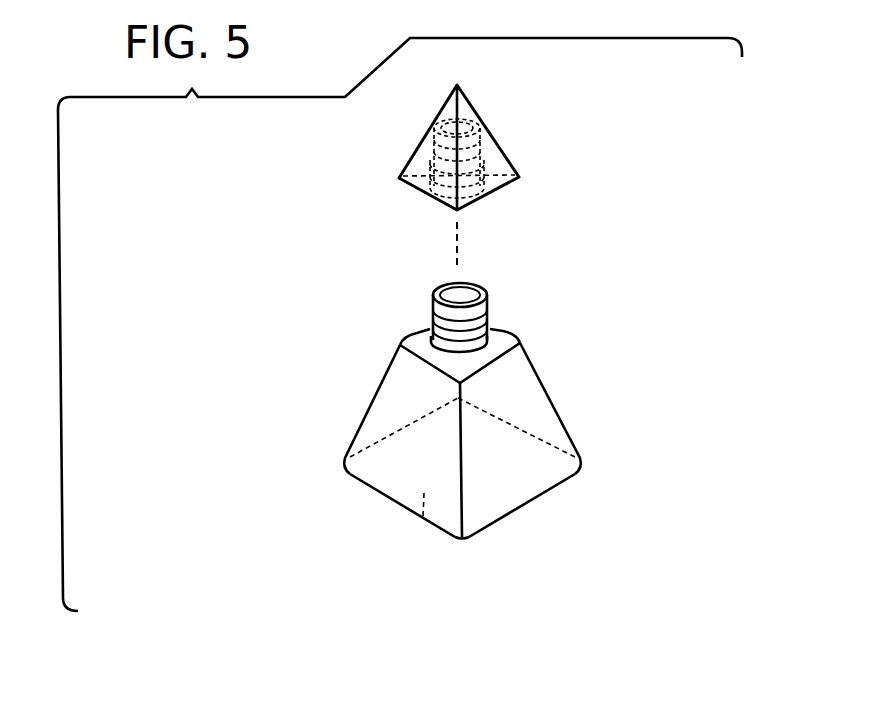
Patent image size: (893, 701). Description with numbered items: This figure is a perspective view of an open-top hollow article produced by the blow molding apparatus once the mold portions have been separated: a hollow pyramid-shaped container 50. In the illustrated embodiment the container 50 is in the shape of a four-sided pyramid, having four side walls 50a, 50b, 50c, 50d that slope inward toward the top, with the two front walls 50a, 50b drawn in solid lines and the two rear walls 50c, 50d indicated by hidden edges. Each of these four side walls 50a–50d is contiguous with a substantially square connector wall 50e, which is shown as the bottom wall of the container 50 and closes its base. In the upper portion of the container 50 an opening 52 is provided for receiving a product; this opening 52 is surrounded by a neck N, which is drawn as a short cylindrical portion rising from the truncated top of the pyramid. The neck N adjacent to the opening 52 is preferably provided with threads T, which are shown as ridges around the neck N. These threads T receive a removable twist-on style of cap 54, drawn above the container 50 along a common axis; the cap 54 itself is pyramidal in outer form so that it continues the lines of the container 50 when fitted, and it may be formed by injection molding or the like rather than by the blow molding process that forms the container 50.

The container 50 is at (586, 217).
The side wall 50a is at (513, 485).
The side wall 50b is at (393, 462).
The side wall 50c is at (405, 397).
The side wall 50d is at (515, 398).
The connector wall 50e is at (421, 518).
The opening 52 is at (452, 292).
The cap 54 is at (482, 107).
The threads T is at (432, 322).
The neck N is at (440, 341).